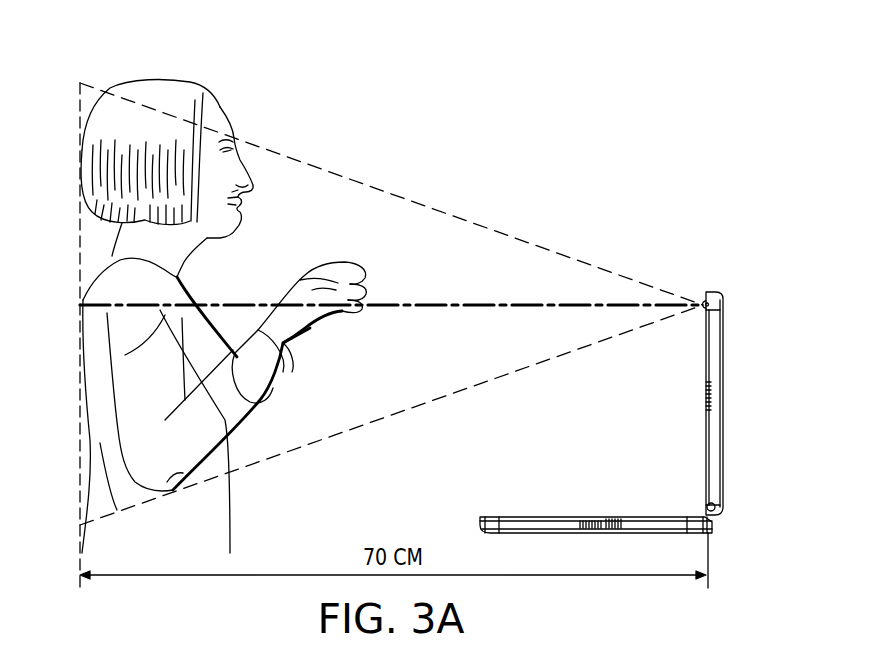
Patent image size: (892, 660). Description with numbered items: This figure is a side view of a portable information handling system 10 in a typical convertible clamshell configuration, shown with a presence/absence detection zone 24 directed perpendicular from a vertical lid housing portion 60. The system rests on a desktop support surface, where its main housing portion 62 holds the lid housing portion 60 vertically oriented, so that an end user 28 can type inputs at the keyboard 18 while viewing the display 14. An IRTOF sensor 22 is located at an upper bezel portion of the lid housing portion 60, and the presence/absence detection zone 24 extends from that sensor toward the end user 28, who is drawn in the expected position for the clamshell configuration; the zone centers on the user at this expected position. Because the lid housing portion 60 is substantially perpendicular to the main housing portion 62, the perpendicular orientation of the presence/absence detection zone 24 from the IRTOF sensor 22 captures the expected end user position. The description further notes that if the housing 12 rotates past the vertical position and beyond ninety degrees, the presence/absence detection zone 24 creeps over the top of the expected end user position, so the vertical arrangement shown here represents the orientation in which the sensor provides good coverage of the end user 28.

The portable information handling system 10 is at (638, 414).
The housing 12 is at (719, 533).
The display 14 is at (705, 401).
The keyboard 18 is at (625, 517).
The IRTOF sensor 22 is at (704, 300).
The presence/absence detection zone 24 is at (377, 222).
The end user 28 is at (154, 80).
The lid housing portion 60 is at (724, 345).
The main housing portion 62 is at (596, 518).